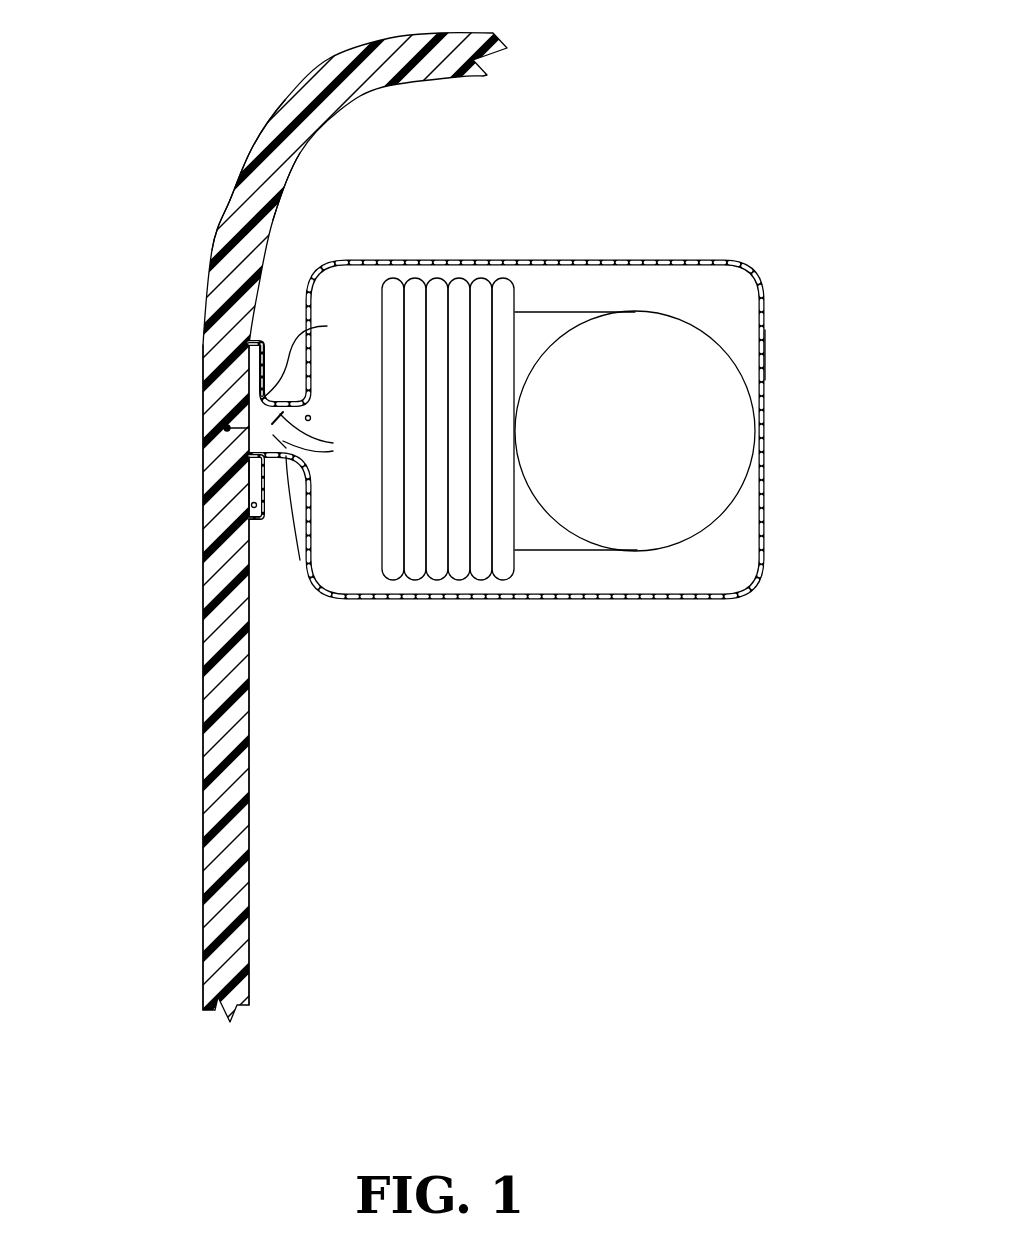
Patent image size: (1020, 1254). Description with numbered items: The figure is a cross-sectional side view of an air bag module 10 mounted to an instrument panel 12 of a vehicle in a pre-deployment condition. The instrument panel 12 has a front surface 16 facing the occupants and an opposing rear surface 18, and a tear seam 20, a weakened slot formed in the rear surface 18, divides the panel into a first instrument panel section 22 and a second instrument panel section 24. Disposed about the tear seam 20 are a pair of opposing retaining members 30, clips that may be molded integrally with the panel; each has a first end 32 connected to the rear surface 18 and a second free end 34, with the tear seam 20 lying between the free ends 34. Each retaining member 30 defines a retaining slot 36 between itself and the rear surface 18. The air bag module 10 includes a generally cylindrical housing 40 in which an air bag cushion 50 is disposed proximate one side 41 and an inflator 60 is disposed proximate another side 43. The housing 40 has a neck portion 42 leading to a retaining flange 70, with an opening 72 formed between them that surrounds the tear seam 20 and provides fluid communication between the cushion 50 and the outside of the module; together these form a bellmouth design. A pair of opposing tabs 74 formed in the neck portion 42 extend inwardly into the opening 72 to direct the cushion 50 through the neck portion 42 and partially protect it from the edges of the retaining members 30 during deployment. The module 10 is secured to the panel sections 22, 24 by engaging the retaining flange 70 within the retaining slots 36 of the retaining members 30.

The air bag module 10 is at (583, 172).
The instrument panel 12 is at (178, 293).
The front surface 16 is at (253, 158).
The rear surface 18 is at (297, 178).
The tear seam 20 is at (224, 430).
The first instrument panel section 22 is at (217, 232).
The second instrument panel section 24 is at (203, 640).
The retaining members 30 is at (264, 340).
The first ends 32 is at (252, 521).
The second free ends 34 is at (314, 354).
The retaining slot 36 is at (247, 506).
The housing 40 is at (700, 262).
The one side of the housing 41 is at (251, 506).
The neck portion 42 is at (300, 560).
The another side of the housing 43 is at (767, 346).
The air bag cushion 50 is at (488, 584).
The inflator 60 is at (680, 540).
The retaining flange 70 is at (255, 383).
The opening 72 is at (311, 416).
The tabs 74 is at (324, 438).